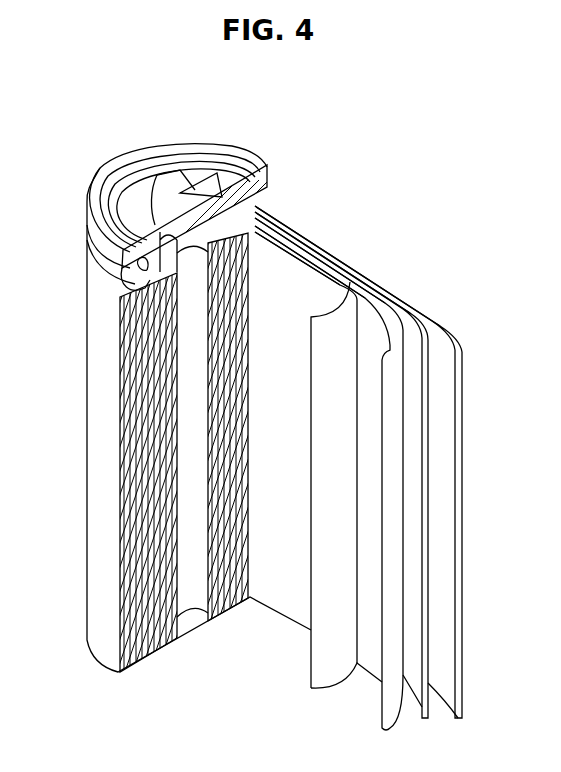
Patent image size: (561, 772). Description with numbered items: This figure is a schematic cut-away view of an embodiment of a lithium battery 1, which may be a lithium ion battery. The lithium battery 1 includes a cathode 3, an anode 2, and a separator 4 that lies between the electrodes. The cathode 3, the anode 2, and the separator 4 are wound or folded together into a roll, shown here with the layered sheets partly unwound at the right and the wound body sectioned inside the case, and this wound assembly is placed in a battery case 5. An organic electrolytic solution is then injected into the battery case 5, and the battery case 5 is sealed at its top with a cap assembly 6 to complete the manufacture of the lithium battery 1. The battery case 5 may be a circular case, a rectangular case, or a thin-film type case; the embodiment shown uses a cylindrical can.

The lithium battery 1 is at (372, 158).
The anode 2 is at (452, 330).
The cathode 3 is at (395, 313).
The separator 4 is at (334, 275).
The battery case 5 is at (90, 441).
The cap assembly 6 is at (178, 180).